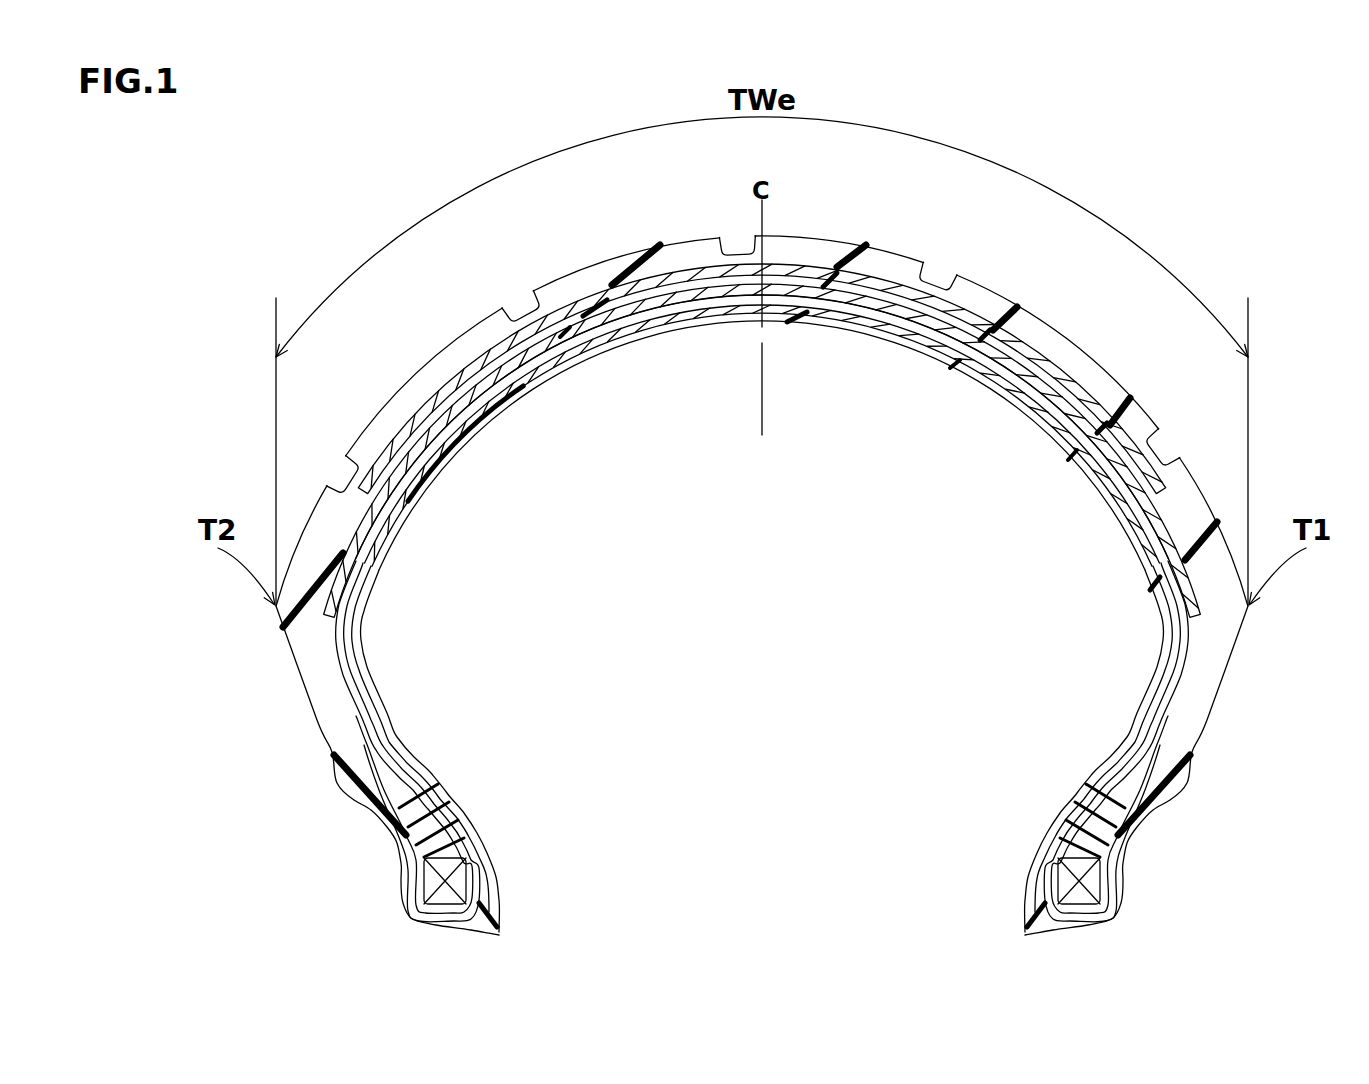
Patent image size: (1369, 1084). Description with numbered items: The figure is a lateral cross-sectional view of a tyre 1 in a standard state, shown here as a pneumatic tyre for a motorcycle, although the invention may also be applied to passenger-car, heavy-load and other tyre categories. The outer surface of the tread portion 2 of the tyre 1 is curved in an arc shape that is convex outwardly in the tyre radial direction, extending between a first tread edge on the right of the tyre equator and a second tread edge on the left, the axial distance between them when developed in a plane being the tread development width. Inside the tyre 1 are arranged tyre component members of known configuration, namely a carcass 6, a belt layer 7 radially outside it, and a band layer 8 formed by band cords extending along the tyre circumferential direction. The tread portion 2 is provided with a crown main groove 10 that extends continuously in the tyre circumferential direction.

The tyre 1 is at (892, 245).
The tread portion 2 is at (684, 241).
The carcass 6 is at (1003, 392).
The belt layer 7 is at (681, 300).
The band layer 8 is at (508, 342).
The crown main groove 10 is at (737, 247).